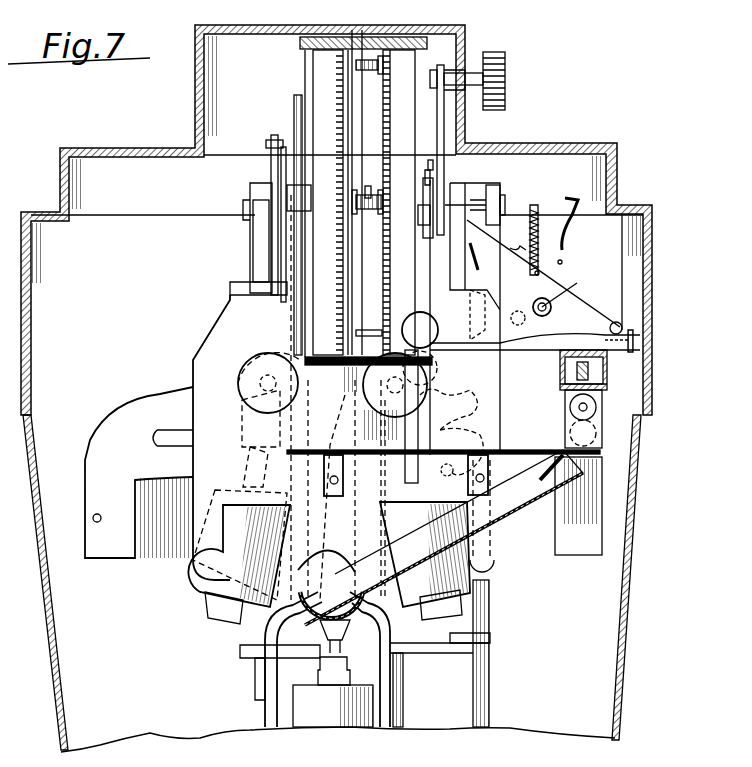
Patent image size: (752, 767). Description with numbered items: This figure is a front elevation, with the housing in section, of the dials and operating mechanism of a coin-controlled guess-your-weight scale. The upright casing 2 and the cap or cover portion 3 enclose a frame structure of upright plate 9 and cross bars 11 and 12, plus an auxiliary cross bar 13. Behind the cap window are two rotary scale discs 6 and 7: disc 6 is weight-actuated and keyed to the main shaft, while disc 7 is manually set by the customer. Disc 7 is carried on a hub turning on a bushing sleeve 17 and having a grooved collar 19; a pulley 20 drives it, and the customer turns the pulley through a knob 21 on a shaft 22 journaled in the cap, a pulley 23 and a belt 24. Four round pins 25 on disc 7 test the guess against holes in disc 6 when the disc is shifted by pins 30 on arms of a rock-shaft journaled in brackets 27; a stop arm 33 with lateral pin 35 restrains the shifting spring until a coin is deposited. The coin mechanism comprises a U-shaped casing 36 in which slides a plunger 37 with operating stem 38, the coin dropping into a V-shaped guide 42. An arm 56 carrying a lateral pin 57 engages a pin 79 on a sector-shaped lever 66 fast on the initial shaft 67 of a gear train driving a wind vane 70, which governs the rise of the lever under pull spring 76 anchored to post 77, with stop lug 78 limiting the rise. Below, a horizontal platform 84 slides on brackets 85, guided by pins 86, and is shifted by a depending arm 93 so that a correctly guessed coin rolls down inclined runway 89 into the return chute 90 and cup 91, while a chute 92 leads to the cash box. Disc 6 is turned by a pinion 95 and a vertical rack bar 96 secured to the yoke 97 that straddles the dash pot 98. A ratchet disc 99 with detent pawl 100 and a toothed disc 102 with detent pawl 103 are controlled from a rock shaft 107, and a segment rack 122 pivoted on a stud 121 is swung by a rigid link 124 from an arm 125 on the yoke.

The upright casing 2 is at (628, 605).
The cap or cover portion 3 is at (653, 276).
The rotary scale disc 6 is at (313, 73).
The rotary scale disc 7 is at (420, 103).
The upright plate 9 is at (228, 322).
The cross bar 11 is at (262, 244).
The cross bar 12 is at (460, 246).
The auxiliary cross bar 13 is at (494, 184).
The bushing sleeve 17 is at (370, 190).
The grooved collar 19 is at (433, 178).
The pulley 20 is at (468, 186).
The knob 21 is at (506, 72).
The shaft 22 is at (465, 72).
The pulley 23 is at (458, 36).
The belt 24 is at (445, 130).
The round pins 25 is at (362, 70).
The brackets 27 is at (438, 268).
The pins 30 is at (220, 762).
The stop arm 33 is at (514, 311).
The lateral pin 35 is at (493, 311).
The plunger casing 36 is at (608, 370).
The plunger 37 is at (565, 378).
The operating stem 38 is at (608, 384).
The V-shaped guide 42 is at (597, 422).
The arm 56 is at (635, 334).
The lateral pin 57 is at (608, 358).
The sector-shaped lever 66 is at (548, 275).
The initial shaft 67 is at (543, 273).
The wind vane 70 is at (575, 245).
The pull spring 76 is at (539, 245).
The post 77 is at (530, 229).
The stop lug 78 is at (515, 243).
The lateral pin 79 is at (622, 322).
The horizontal platform 84 is at (600, 451).
The brackets 85 is at (343, 480).
The pins 86 is at (337, 452).
The inclined runway 89 is at (572, 463).
The return chute 90 is at (498, 508).
The cup 91 is at (320, 618).
The chute 92 is at (600, 502).
The depending arm 93 is at (418, 392).
The pinion 95 is at (311, 200).
The vertical rack bar 96 is at (294, 106).
The yoke 97 is at (404, 684).
The dash pot 98 is at (360, 712).
The ratchet disc 99 is at (280, 160).
The detent pawl 100 is at (270, 141).
The toothed disc 102 is at (430, 172).
The detent pawl 103 is at (430, 160).
The rock shaft 107 is at (535, 343).
The stud 121 is at (461, 452).
The segment rack 122 is at (445, 408).
The rigid link 124 is at (489, 604).
The arm 125 is at (455, 653).